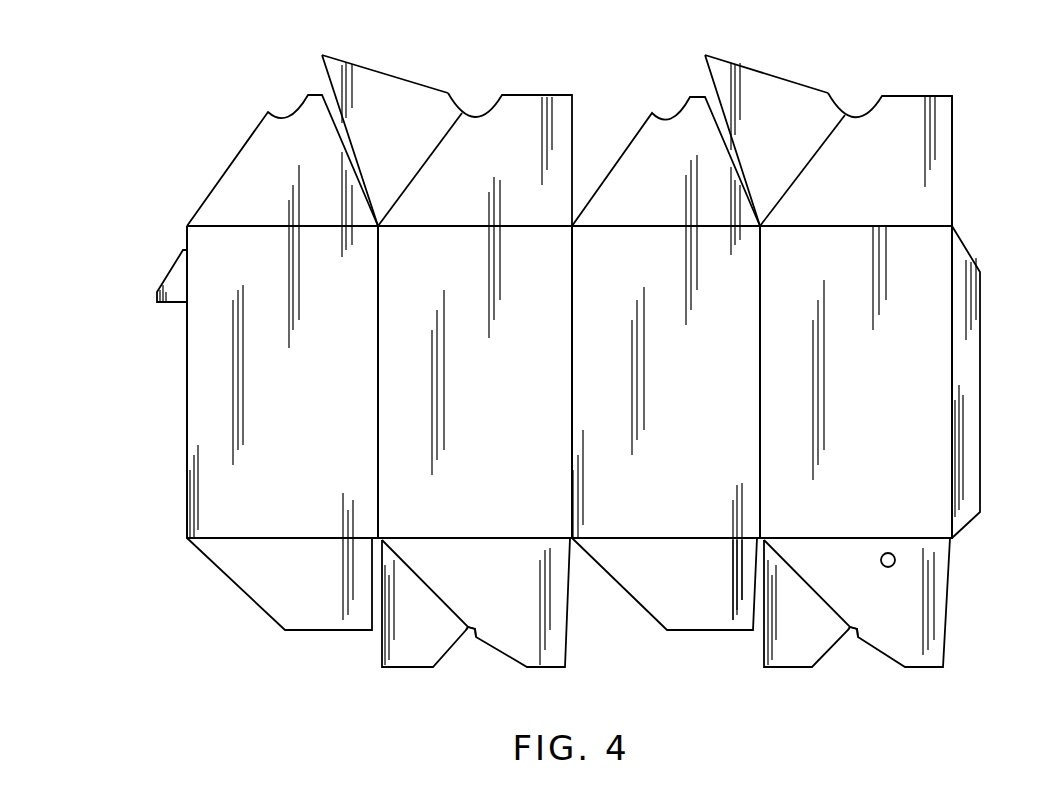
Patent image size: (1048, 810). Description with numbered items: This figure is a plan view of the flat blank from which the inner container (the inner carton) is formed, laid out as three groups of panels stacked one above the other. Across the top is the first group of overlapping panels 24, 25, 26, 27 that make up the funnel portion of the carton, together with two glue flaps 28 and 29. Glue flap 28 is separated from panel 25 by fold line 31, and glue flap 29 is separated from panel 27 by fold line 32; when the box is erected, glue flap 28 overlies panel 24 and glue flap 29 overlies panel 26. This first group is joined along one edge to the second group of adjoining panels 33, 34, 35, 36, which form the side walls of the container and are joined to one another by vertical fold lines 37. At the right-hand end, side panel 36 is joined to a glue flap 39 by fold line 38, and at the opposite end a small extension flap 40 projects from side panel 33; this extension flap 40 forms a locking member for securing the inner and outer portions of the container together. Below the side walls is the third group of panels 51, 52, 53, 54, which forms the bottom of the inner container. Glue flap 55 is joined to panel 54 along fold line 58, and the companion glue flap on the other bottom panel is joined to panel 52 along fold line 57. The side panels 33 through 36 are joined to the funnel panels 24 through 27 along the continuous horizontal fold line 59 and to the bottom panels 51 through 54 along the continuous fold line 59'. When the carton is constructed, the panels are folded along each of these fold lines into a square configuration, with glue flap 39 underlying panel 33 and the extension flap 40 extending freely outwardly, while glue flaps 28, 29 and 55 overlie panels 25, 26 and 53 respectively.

The overlapping panel 24 is at (305, 153).
The overlapping panel 25 is at (475, 155).
The overlapping panel 26 is at (650, 153).
The overlapping panel 27 is at (864, 153).
The glue flap 28 is at (375, 153).
The glue flap 29 is at (755, 153).
The fold line 31 is at (404, 192).
The fold line 32 is at (785, 195).
The side panel 33 is at (258, 390).
The side panel 34 is at (451, 390).
The side panel 35 is at (648, 390).
The side panel 36 is at (826, 390).
The fold lines 37 is at (378, 448).
The fold line 38 is at (952, 450).
The glue flap 39 is at (970, 370).
The extension flap 40 is at (173, 278).
The bottom panel 51 is at (276, 595).
The bottom panel 52 is at (473, 595).
The bottom panel 53 is at (660, 595).
The bottom panel 54 is at (403, 644).
The glue flap 55 is at (781, 649).
The fold line 57 is at (468, 625).
The fold line 58 is at (851, 626).
The continuous fold line 59 is at (666, 246).
The continuous fold line 59' is at (666, 511).